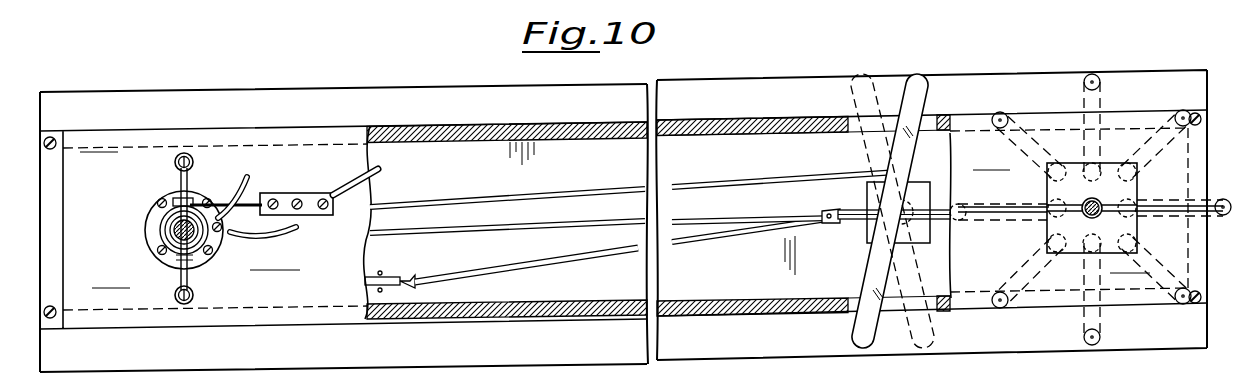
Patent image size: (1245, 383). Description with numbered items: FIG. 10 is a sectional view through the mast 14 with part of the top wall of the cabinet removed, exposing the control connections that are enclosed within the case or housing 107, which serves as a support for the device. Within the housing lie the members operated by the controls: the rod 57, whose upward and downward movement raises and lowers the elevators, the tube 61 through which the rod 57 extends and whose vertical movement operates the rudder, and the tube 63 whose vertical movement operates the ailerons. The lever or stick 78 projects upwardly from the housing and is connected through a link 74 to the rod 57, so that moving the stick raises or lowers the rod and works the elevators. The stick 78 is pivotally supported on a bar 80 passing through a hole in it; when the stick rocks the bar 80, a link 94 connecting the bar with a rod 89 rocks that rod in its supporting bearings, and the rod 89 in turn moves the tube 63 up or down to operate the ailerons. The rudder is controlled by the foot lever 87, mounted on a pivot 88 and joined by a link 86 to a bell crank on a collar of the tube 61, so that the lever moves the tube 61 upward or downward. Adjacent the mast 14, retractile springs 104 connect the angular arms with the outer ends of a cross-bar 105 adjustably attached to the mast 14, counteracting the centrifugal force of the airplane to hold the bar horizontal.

The mast 14 is at (210, 240).
The rod 57 is at (170, 232).
The tube 61 is at (168, 223).
The tube 63 is at (172, 242).
The link 74 is at (708, 220).
The lever or stick 78 is at (1097, 202).
The bar 80 is at (1130, 216).
The link 86 is at (700, 184).
The lever 87 is at (866, 346).
The pivot 88 is at (905, 210).
The rod 89 is at (374, 280).
The link 94 is at (710, 240).
The springs 104 is at (176, 164).
The cross-bar 105 is at (190, 181).
The case or housing 107 is at (726, 302).